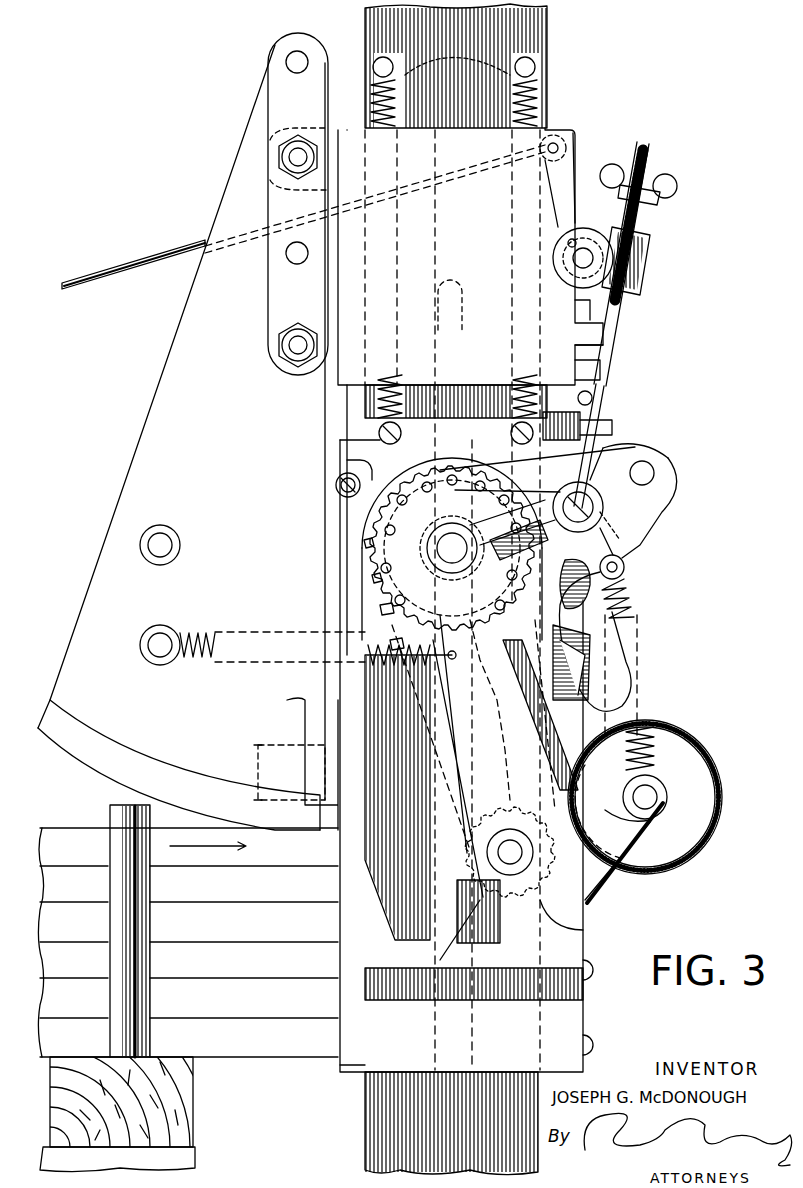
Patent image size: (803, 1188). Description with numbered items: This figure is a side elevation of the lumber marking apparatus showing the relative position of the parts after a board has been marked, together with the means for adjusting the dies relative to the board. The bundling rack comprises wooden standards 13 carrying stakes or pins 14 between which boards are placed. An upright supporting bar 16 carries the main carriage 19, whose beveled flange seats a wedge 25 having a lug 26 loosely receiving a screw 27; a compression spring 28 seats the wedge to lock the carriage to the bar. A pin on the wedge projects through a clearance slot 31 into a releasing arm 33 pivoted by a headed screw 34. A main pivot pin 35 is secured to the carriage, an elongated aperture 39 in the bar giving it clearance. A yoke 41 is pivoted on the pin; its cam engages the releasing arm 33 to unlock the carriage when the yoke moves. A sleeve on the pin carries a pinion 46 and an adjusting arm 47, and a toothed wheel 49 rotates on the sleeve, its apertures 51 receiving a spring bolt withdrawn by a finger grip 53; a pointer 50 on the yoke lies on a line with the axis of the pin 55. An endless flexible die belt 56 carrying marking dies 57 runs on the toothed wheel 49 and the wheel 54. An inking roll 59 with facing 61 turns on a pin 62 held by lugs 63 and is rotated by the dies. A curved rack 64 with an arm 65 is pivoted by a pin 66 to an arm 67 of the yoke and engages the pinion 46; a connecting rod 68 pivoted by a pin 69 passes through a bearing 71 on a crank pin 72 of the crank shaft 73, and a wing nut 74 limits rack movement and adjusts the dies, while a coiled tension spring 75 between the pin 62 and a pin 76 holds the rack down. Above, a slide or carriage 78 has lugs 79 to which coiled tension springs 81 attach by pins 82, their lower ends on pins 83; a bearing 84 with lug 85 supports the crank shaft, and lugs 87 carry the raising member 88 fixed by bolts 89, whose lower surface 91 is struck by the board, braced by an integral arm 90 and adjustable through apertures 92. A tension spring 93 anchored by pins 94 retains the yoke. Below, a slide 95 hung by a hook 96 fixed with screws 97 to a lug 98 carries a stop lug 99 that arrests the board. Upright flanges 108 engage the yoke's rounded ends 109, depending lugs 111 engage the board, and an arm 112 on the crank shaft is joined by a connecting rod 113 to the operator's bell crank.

The wooden standards 13 is at (150, 1093).
The stakes or pins 14 is at (110, 808).
The upright supporting bar 16 is at (540, 30).
The main carriage 19 is at (400, 453).
The wedge 25 is at (555, 425).
The lug 26 is at (608, 423).
The screw 27 is at (600, 370).
The compression spring 28 is at (590, 400).
The clearance slot 31 is at (570, 458).
The releasing arm 33 is at (365, 460).
The headed screw 34 is at (336, 488).
The main pivot pin 35 is at (450, 545).
The elongated aperture 39 is at (462, 280).
The yoke 41 is at (470, 745).
The pinion 46 is at (452, 560).
The adjusting arm 47 is at (555, 540).
The toothed wheel 49 is at (365, 625).
The pointer 50 is at (500, 842).
The apertures 51 is at (380, 610).
The finger grip 53 is at (570, 514).
The wheel 54 is at (515, 808).
The pin 55 is at (511, 866).
The endless flexible die belt 56 is at (365, 540).
The marking dies 57 is at (360, 582).
The inking roll 59 is at (670, 748).
The facing 61 is at (718, 787).
The pin 62 is at (648, 797).
The lugs 63 is at (620, 820).
The rack 64 is at (445, 525).
The arm 65 is at (625, 500).
The pin 66 is at (655, 473).
The arm 67 is at (615, 450).
The connecting rod 68 is at (650, 142).
The pin 69 is at (600, 512).
The bearing 71 is at (600, 265).
The crank pin 72 is at (600, 248).
The crank shaft 73 is at (600, 218).
The wing nut 74 is at (670, 185).
The coiled tension spring 75 is at (640, 610).
The pin 76 is at (625, 567).
The slide or carriage 78 is at (437, 165).
The lugs 79 is at (510, 55).
The coiled tension springs 81 is at (510, 80).
The pins 82 is at (383, 58).
The pins 83 is at (410, 433).
The bearing 84 is at (605, 302).
The lug 85 is at (595, 330).
The lugs 87 is at (320, 128).
The raising member 88 is at (120, 517).
The bolts 89 is at (292, 157).
The transversely extending integral arm 90 is at (290, 745).
The lower surface 91 is at (100, 770).
The apertures 92 is at (290, 57).
The tension spring 93 is at (200, 632).
The pins 94 is at (158, 550).
The slide 95 is at (365, 1077).
The hook 96 is at (590, 660).
The screws 97 is at (587, 1043).
The lug 98 is at (610, 690).
The stop lug 99 is at (350, 850).
The upright lugs or flanges 108 is at (335, 768).
The rounded ends 109 is at (480, 930).
The depending lugs 111 is at (585, 930).
The arm 112 is at (578, 230).
The connecting rod 113 is at (135, 262).